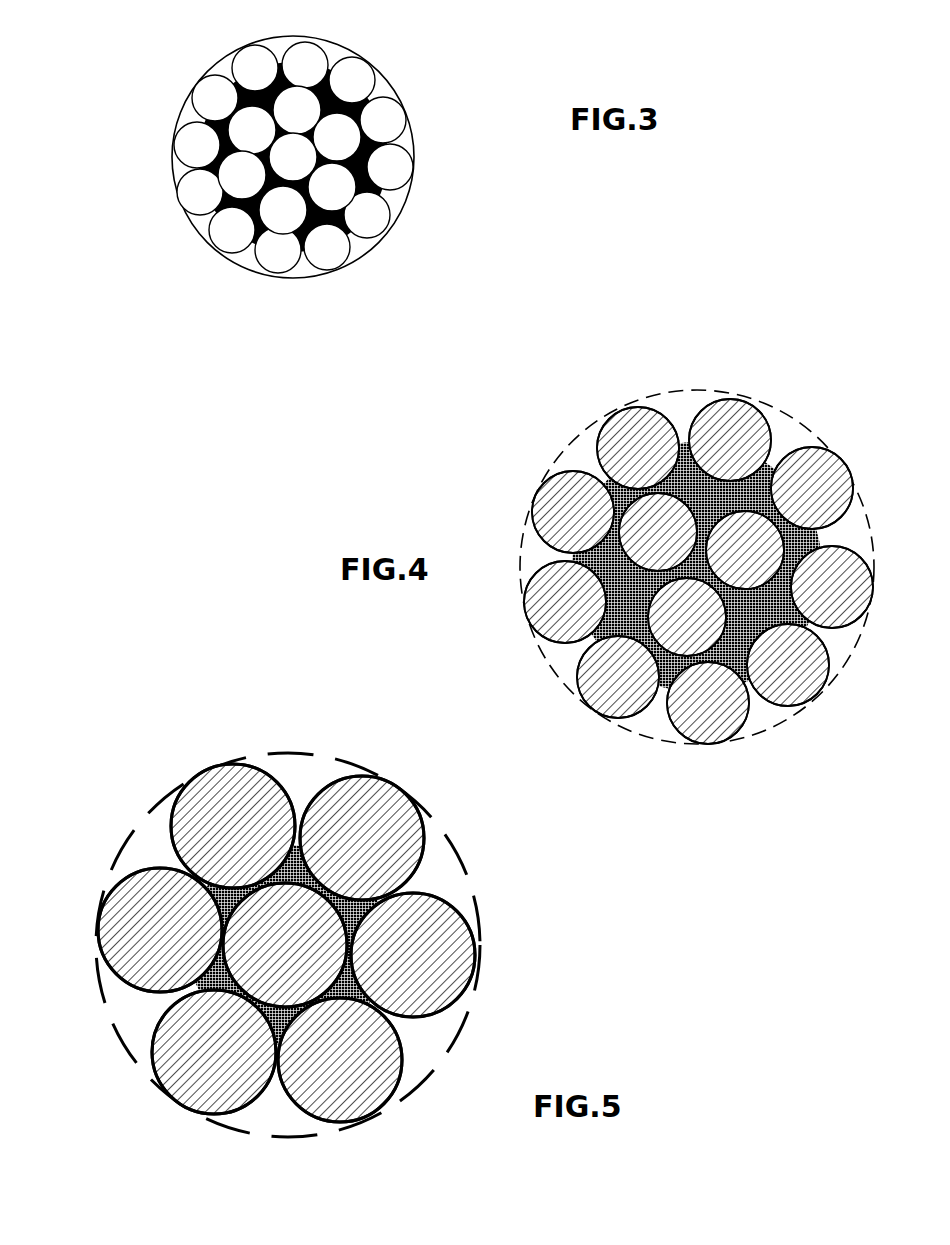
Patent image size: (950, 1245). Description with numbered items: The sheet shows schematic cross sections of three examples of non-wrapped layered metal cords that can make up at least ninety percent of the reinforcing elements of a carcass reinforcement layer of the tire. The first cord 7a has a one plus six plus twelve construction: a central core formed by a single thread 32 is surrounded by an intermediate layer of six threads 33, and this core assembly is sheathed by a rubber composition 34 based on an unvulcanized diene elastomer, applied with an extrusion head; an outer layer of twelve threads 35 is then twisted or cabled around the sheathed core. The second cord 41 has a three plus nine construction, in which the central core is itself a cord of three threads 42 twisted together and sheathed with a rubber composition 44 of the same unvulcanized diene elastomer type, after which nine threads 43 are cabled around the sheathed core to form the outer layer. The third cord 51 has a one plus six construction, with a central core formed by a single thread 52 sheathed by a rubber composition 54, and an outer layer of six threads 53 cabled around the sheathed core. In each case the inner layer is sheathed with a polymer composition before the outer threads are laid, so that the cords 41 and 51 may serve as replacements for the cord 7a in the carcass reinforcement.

In FIG. 3, the carcass reinforcement cord 7a is at (403, 69).
In FIG. 3, the thread 32 is at (280, 155).
In FIG. 3, the threads 33 is at (245, 182).
In FIG. 3, the rubber composition 34 is at (373, 170).
In FIG. 3, the threads 35 is at (333, 257).
In FIG. 4, the carcass reinforcement cord 41 is at (478, 524).
In FIG. 4, the threads 42 is at (803, 470).
In FIG. 4, the threads 43 is at (742, 420).
In FIG. 4, the rubber composition 44 is at (563, 617).
In FIG. 5, the carcass reinforcement cord 51 is at (193, 749).
In FIG. 5, the thread 52 is at (255, 1003).
In FIG. 5, the threads 53 is at (117, 857).
In FIG. 5, the rubber composition 54 is at (153, 1080).